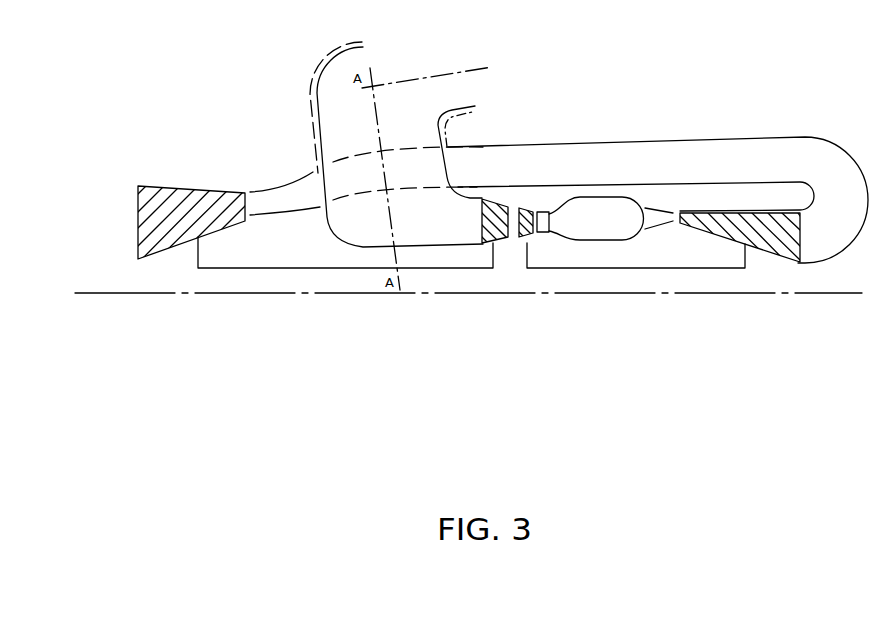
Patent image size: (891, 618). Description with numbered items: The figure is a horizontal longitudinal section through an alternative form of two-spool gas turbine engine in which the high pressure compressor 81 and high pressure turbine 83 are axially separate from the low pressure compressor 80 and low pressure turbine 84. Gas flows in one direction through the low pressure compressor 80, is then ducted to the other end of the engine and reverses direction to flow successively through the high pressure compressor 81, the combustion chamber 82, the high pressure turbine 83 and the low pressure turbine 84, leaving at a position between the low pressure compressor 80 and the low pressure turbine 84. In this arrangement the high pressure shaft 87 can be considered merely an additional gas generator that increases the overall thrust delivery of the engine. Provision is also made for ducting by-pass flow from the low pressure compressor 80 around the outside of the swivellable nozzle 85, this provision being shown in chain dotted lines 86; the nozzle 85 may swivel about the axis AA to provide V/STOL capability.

The low pressure compressor 80 is at (148, 186).
The high pressure compressor 81 is at (790, 262).
The combustion chamber 82 is at (612, 240).
The high pressure turbine 83 is at (524, 240).
The low pressure turbine 84 is at (503, 244).
The swivellable nozzle 85 is at (445, 113).
The chain dotted lines 86 is at (478, 112).
The high pressure shaft 87 is at (685, 270).